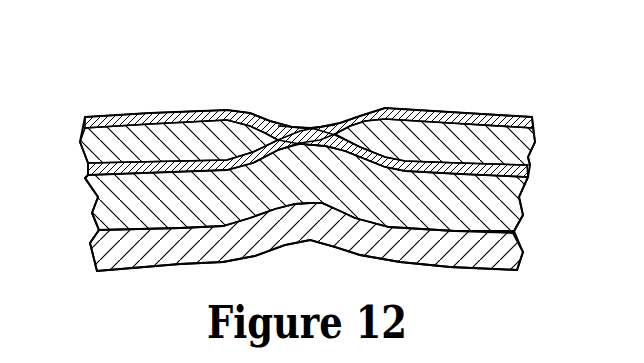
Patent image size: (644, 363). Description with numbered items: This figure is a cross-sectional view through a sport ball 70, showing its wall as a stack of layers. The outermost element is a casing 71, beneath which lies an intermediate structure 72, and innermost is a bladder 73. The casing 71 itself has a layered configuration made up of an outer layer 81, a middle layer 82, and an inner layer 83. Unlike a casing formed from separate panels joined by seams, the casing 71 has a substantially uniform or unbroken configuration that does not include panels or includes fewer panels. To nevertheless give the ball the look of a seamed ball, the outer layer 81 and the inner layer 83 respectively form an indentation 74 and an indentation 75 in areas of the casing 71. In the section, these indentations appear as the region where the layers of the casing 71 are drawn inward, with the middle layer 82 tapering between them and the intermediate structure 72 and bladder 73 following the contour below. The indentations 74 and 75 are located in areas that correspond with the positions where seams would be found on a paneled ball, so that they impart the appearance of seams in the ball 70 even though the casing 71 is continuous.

The sport ball 70 is at (490, 79).
The casing 71 is at (140, 107).
The outer layer 81 is at (444, 110).
The middle layer 82 is at (88, 148).
The inner layer 83 is at (530, 156).
The intermediate structure 72 is at (528, 224).
The bladder 73 is at (478, 276).
The indentation 74 is at (311, 127).
The indentation 75 is at (310, 146).